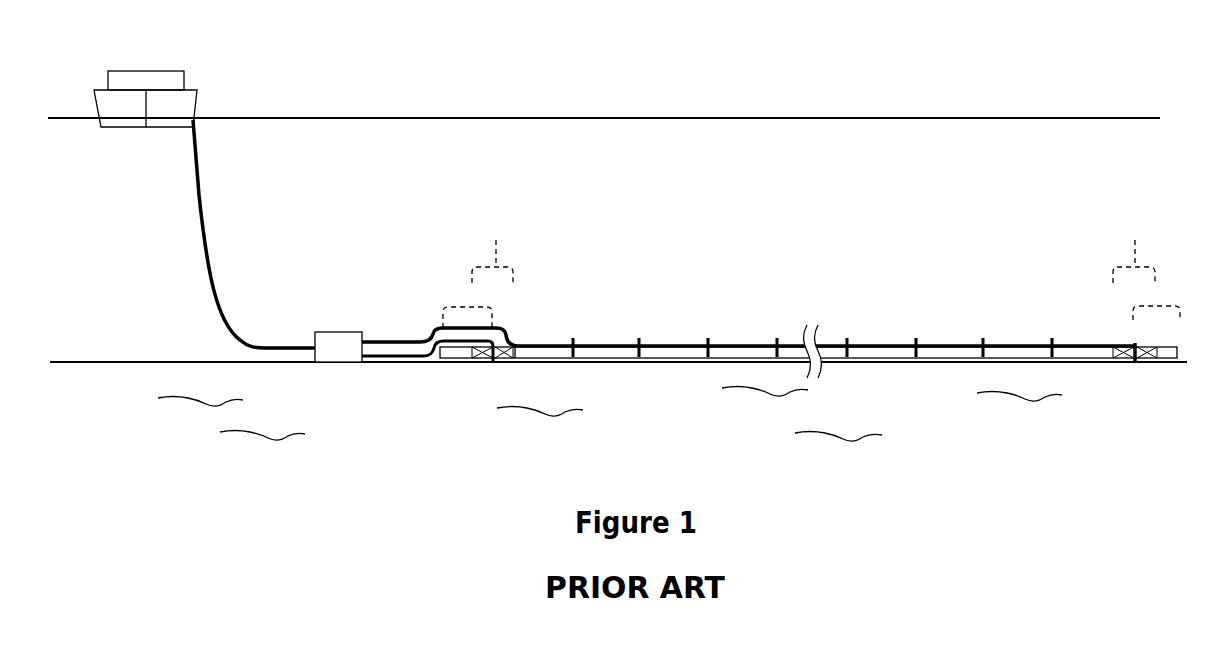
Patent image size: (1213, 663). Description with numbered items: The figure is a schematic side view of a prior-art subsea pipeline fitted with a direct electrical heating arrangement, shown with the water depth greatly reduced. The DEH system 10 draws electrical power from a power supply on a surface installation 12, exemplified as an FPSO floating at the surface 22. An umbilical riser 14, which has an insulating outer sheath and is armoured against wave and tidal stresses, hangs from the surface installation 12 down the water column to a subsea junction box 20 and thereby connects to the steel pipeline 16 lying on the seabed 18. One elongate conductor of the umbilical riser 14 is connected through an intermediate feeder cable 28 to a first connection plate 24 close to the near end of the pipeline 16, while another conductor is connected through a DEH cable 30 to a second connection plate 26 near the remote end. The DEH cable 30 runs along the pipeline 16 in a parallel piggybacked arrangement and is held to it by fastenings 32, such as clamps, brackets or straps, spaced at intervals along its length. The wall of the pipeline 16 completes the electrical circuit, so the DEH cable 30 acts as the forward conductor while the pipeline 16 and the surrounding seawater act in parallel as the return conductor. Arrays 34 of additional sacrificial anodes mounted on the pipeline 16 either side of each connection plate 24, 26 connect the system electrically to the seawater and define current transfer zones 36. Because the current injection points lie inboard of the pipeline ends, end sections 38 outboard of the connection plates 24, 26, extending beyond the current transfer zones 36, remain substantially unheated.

The DEH system 10 is at (776, 262).
The surface installation 12 is at (187, 102).
The umbilical riser 14 is at (213, 270).
The steel pipeline 16 is at (951, 358).
The seabed 18 is at (90, 363).
The subsea junction box 20 is at (335, 345).
The surface 22 is at (528, 119).
The first connection plate 24 is at (493, 360).
The second connection plate 26 is at (1132, 357).
The feeder cable 28 is at (390, 358).
The DEH cable 30 is at (382, 341).
The fastenings 32 is at (847, 342).
The arrays of sacrificial anodes 34 is at (475, 355).
The current transfer zones 36 is at (813, 245).
The end sections 38 is at (468, 305).